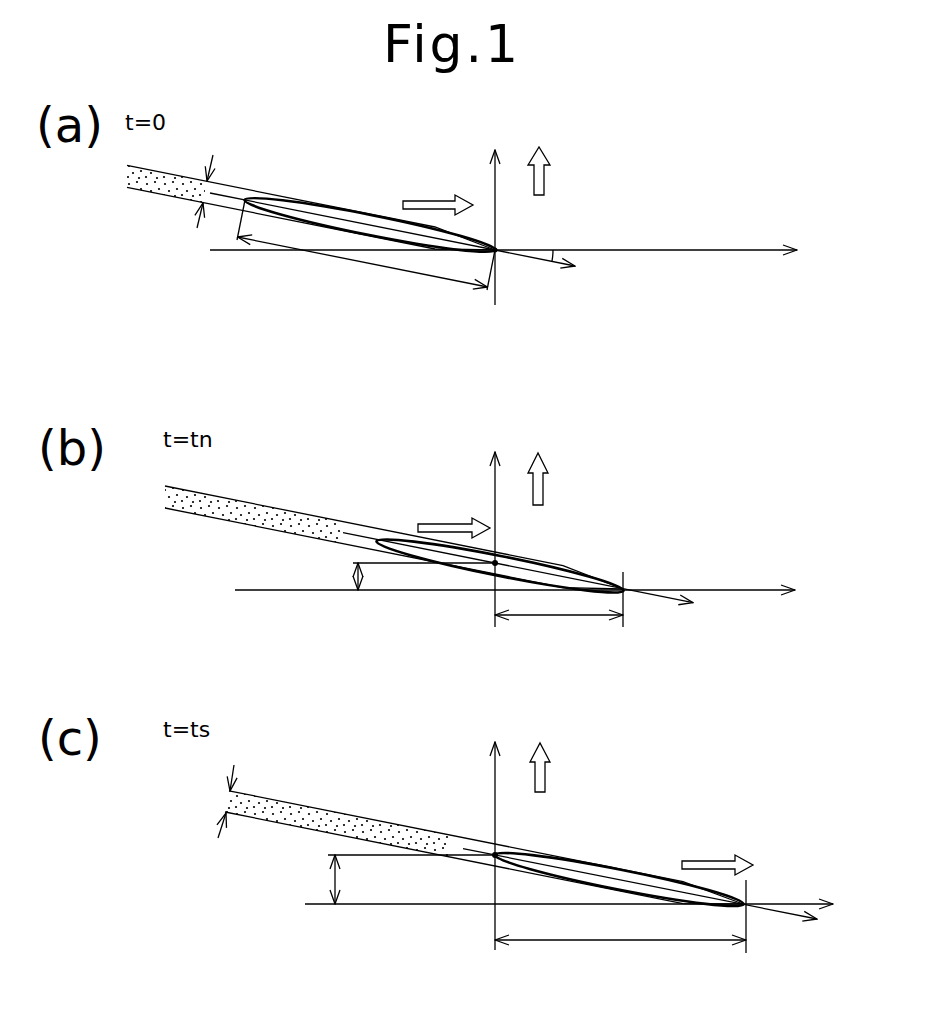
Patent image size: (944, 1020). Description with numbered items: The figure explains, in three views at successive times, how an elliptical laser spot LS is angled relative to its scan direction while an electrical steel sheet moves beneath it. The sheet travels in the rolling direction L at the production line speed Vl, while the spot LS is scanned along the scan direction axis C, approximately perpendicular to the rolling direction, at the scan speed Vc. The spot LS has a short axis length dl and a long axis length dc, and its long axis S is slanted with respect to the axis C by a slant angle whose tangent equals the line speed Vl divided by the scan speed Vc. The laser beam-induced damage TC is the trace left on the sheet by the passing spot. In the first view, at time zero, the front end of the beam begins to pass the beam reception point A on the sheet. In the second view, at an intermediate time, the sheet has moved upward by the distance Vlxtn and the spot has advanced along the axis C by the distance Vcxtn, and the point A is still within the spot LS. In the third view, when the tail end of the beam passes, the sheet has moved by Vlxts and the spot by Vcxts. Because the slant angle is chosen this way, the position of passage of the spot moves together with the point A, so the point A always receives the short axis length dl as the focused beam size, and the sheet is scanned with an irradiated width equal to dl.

The laser beam-induced damage TC is at (275, 508).
The elliptical spot LS is at (297, 200).
The beam reception point A is at (510, 539).
The rolling direction L is at (494, 533).
The scan direction axis C is at (533, 578).
The long axis of the elliptical spot S is at (513, 575).
The scan speed Vc is at (578, 521).
The line speed Vl is at (552, 471).
The short axis length dl is at (229, 496).
The long axis length dc is at (366, 245).
The sheet travel distance at time tn Vlxtn is at (383, 577).
The spot scan distance at time tn Vcxtn is at (559, 613).
The sheet travel distance at time ts Vlxts is at (374, 879).
The spot scan distance at time ts Vcxts is at (620, 929).